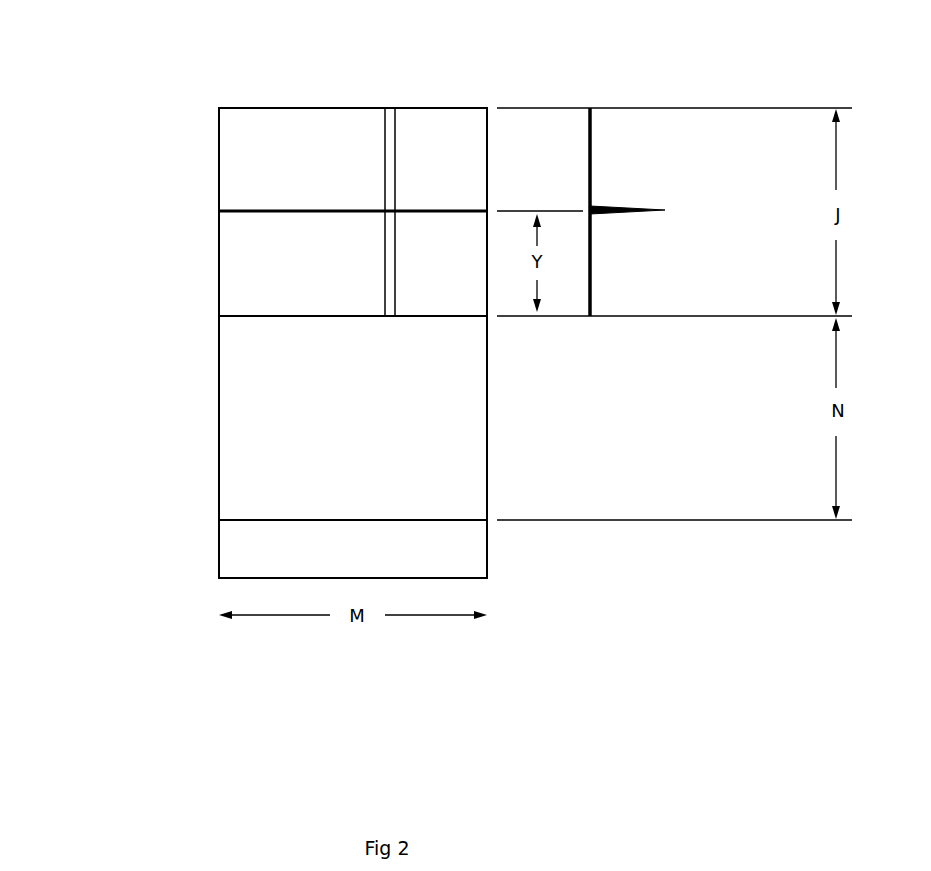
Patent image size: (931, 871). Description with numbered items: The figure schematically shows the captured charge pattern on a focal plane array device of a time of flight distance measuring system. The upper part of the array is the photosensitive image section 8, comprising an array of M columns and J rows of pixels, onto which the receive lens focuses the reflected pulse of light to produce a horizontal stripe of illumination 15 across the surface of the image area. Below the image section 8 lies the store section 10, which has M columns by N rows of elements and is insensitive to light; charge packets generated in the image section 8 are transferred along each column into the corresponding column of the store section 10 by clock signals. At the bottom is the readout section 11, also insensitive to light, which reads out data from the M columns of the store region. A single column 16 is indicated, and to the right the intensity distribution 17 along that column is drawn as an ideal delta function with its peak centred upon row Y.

The image section 8 is at (353, 212).
The store section 10 is at (353, 418).
The readout section 11 is at (353, 549).
The stripe of illumination 15 is at (219, 211).
The vertical channel 16 is at (390, 108).
The intensity distribution 17 is at (665, 210).